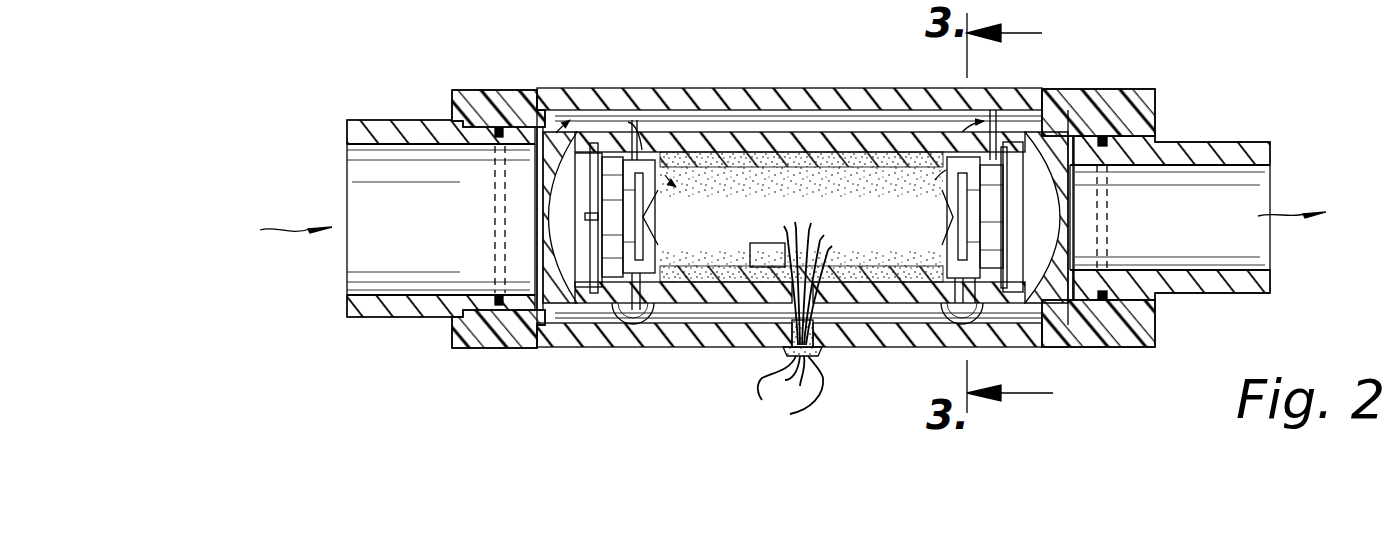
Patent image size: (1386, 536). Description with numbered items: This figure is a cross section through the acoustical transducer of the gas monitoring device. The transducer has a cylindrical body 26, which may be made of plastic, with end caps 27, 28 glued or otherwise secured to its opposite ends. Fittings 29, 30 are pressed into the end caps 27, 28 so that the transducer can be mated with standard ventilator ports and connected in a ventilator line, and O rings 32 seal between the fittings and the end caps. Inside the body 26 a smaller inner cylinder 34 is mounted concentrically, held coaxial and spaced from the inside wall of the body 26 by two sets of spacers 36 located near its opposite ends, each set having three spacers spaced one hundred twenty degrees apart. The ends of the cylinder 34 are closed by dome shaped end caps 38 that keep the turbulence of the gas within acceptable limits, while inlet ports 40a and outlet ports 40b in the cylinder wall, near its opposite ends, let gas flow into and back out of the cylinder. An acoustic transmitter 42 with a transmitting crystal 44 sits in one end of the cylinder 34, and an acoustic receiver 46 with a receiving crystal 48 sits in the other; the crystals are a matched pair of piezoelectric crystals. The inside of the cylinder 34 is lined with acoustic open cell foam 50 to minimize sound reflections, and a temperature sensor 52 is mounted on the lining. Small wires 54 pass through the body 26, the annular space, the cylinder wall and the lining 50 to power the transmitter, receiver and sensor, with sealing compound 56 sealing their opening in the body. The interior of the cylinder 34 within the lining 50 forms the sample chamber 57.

The cylindrical body 26 is at (741, 98).
The end cap 27 is at (518, 100).
The end cap 28 is at (1100, 94).
The fitting 29 is at (397, 120).
The fitting 30 is at (1222, 142).
The O rings 32 is at (500, 128).
The inner cylinder 34 is at (860, 150).
The spacers 36 is at (632, 324).
The dome shaped end caps 38 is at (546, 220).
The inlet ports 40a is at (640, 152).
The outlet ports 40b is at (935, 178).
The acoustic transmitter 42 is at (613, 150).
The transmitting crystal 44 is at (652, 217).
The acoustic receiver 46 is at (993, 158).
The receiving crystal 48 is at (948, 212).
The acoustic open cell foam 50 is at (720, 266).
The temperature sensor 52 is at (768, 243).
The wires 54 is at (800, 400).
The sealing compound 56 is at (812, 345).
The sample chamber 57 is at (782, 178).